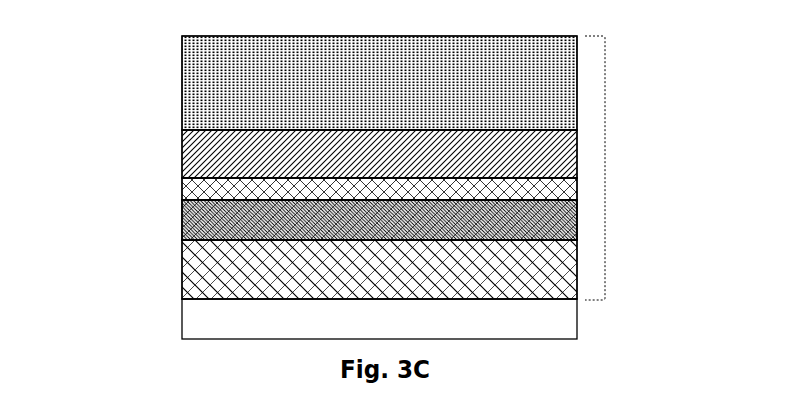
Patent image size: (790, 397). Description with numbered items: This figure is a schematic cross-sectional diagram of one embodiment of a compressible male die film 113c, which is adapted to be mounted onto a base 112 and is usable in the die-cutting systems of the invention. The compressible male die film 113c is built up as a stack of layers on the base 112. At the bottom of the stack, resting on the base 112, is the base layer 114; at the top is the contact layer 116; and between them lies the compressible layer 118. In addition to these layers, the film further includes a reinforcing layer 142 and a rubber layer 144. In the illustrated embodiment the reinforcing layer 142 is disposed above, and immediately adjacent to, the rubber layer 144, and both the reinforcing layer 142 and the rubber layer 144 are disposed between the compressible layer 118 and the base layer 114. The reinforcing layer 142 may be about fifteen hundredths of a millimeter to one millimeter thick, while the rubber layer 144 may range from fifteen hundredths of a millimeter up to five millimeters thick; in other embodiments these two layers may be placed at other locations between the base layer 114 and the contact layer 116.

The contact layer 116 is at (190, 96).
The compressible layer 118 is at (186, 144).
The reinforcing layer 142 is at (186, 184).
The rubber layer 144 is at (186, 215).
The base layer 114 is at (186, 258).
The base 112 is at (200, 319).
The compressible male die film 113c is at (605, 169).